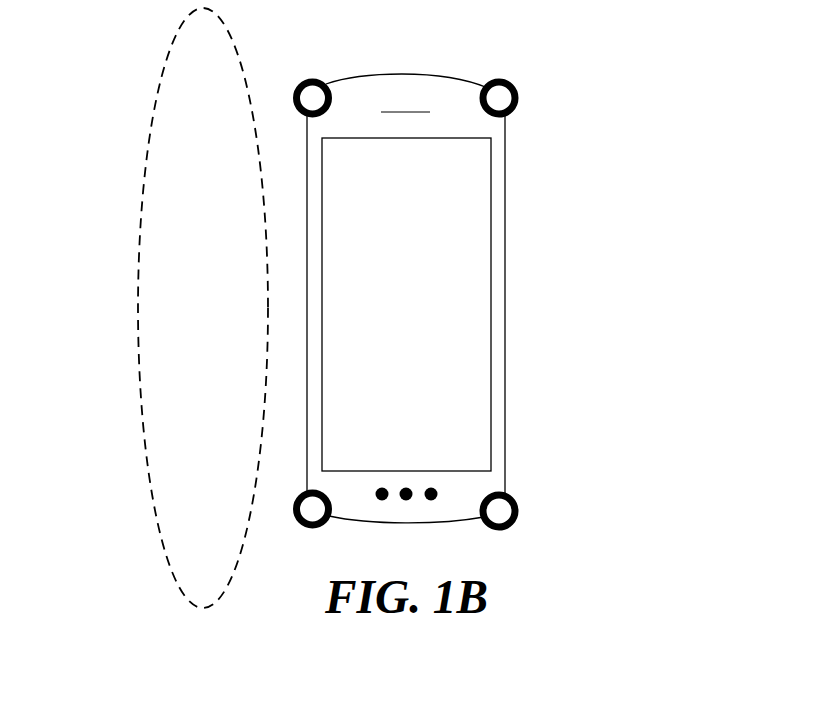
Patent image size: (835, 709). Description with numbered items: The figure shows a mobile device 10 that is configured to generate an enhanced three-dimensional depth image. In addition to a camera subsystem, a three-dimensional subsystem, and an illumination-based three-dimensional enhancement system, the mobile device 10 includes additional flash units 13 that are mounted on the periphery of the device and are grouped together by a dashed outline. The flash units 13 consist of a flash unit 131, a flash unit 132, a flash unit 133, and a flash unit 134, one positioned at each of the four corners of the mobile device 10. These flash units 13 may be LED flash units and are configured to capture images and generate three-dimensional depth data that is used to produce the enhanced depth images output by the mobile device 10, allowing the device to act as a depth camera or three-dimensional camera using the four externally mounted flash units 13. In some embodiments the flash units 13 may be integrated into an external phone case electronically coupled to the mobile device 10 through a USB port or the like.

The mobile device 10 is at (508, 278).
The flash units 13 is at (142, 410).
The flash unit 131 is at (296, 101).
The flash unit 132 is at (488, 84).
The flash unit 133 is at (294, 508).
The flash unit 134 is at (484, 521).